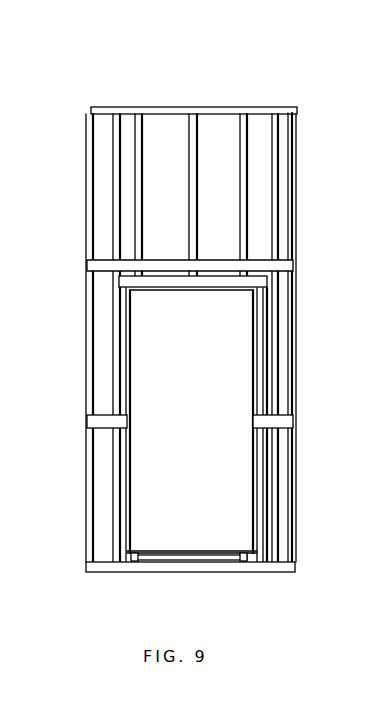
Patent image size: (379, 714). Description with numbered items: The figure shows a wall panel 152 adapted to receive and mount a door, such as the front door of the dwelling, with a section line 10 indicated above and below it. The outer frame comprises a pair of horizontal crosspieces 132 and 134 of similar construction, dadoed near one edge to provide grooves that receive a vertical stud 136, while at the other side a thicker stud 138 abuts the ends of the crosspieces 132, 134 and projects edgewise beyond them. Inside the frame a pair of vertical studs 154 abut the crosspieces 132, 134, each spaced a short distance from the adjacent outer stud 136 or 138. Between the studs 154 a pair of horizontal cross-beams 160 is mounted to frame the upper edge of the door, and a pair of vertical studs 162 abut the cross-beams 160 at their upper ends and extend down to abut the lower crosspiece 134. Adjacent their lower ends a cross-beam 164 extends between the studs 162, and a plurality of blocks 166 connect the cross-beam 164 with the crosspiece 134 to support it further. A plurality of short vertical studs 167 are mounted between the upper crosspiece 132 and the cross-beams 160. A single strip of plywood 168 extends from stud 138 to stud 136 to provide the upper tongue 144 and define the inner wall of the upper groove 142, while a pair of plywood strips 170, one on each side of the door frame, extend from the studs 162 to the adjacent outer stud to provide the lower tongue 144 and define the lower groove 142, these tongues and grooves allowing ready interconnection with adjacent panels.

The section line 10- 10 is at (177, 107).
The horizontal crosspiece 132 is at (240, 111).
The horizontal crosspiece 134 is at (226, 566).
The vertical stud 136 is at (288, 170).
The stud 138 is at (89, 170).
The grooves 142 is at (87, 265).
The tongues 144 is at (293, 265).
The panel 152 is at (185, 110).
The vertical studs 154 is at (121, 337).
The horizontal cross-beams 160 is at (169, 281).
The vertical studs 162 is at (129, 357).
The cross-beam 164 is at (172, 555).
The blocks 166 is at (243, 558).
The short vertical studs 167 is at (142, 168).
The strip of plywood 168 is at (222, 264).
The plywood strips 170 is at (113, 421).